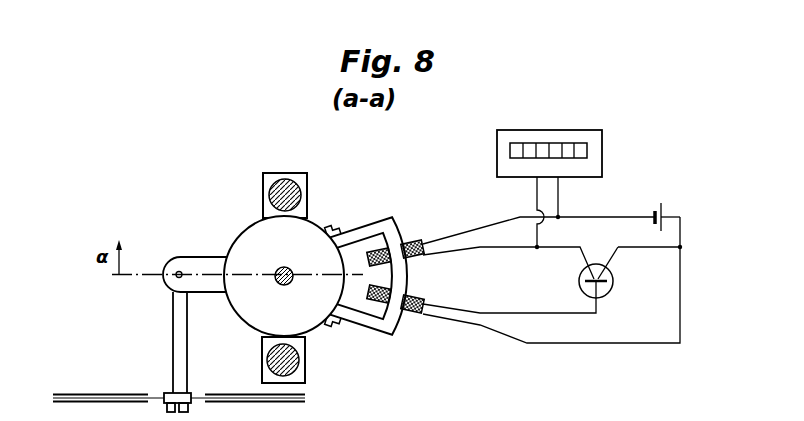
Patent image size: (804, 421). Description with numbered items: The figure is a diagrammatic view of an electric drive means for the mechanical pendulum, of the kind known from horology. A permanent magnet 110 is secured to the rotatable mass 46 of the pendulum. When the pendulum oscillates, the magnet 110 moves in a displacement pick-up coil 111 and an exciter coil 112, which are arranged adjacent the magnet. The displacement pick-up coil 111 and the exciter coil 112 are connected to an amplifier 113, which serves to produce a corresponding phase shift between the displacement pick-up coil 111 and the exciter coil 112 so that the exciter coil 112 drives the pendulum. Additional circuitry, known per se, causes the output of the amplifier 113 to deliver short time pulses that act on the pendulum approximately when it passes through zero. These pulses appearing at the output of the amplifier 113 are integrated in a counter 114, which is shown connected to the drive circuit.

The rotatable mass 46 is at (247, 238).
The permanent magnet 110 is at (398, 230).
The displacement pick-up coil 111 is at (416, 314).
The exciter coil 112 is at (421, 242).
The amplifier 113 is at (602, 289).
The counter 114 is at (549, 137).